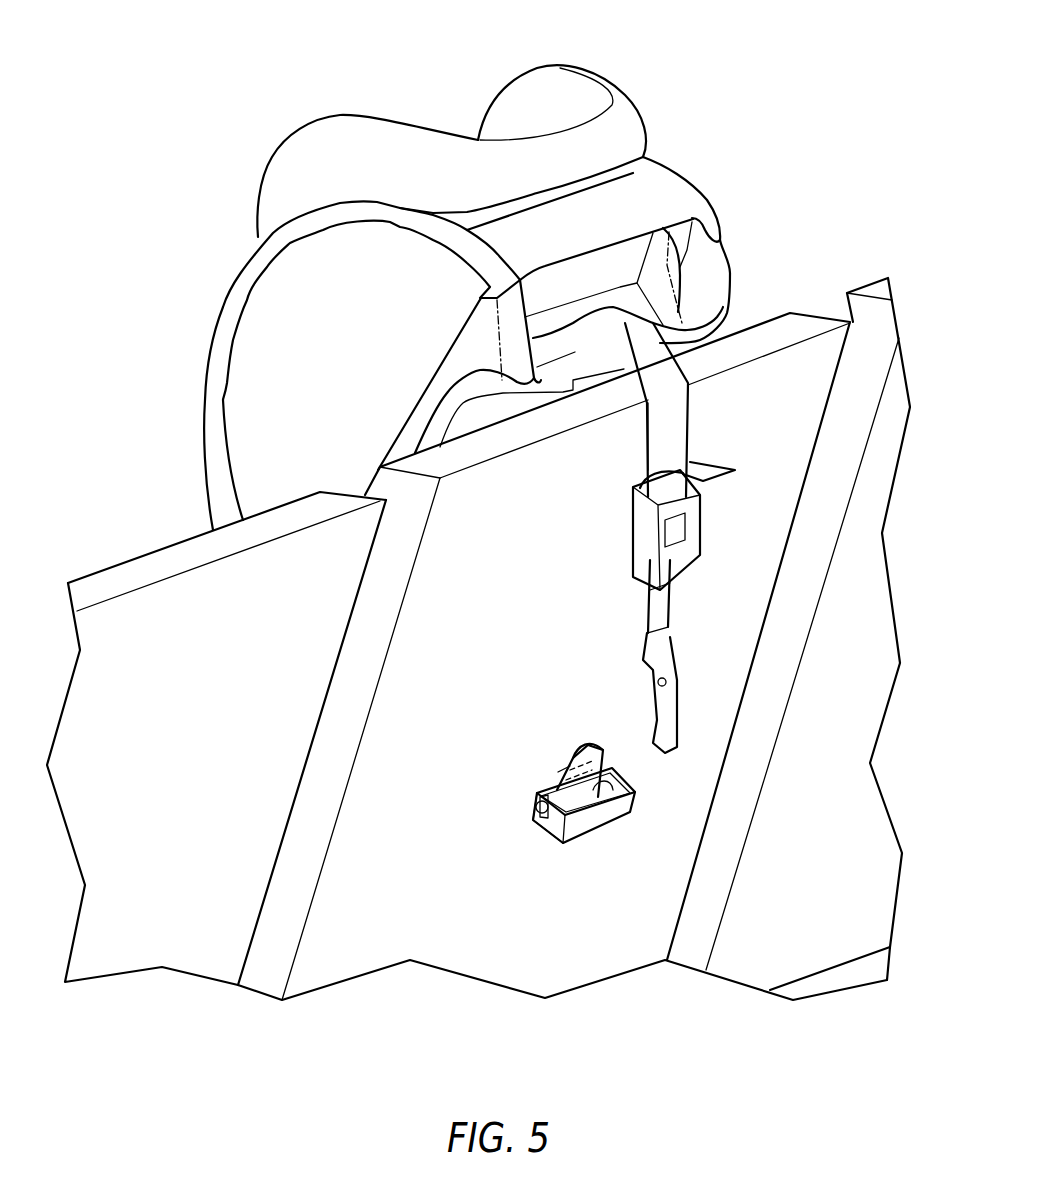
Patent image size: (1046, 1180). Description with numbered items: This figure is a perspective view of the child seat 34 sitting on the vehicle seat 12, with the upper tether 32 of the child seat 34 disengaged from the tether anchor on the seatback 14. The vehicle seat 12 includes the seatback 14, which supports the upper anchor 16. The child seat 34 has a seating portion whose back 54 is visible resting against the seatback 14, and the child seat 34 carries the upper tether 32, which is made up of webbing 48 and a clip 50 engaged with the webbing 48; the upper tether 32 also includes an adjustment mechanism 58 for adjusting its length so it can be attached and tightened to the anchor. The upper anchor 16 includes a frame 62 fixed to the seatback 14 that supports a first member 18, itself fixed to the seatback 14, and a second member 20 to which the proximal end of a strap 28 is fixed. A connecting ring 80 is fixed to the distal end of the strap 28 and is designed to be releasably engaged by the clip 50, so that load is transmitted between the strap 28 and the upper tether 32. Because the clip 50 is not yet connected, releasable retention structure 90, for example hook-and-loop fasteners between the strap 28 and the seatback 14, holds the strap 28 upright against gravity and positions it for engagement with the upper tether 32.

The vehicle seat 12 is at (808, 268).
The seatback 14 is at (790, 393).
The upper anchor 16 is at (569, 796).
The first member 18 is at (627, 807).
The second member 20 is at (528, 808).
The strap 28 is at (600, 767).
The upper tether 32 is at (673, 424).
The child seat 34 is at (693, 117).
The webbing 48 is at (662, 450).
The clip 50 is at (682, 733).
The back 54 is at (522, 162).
The adjustment mechanism 58 is at (693, 523).
The frame 62 is at (552, 837).
The connecting ring 80 is at (588, 740).
The releasable retention structure 90 is at (563, 752).